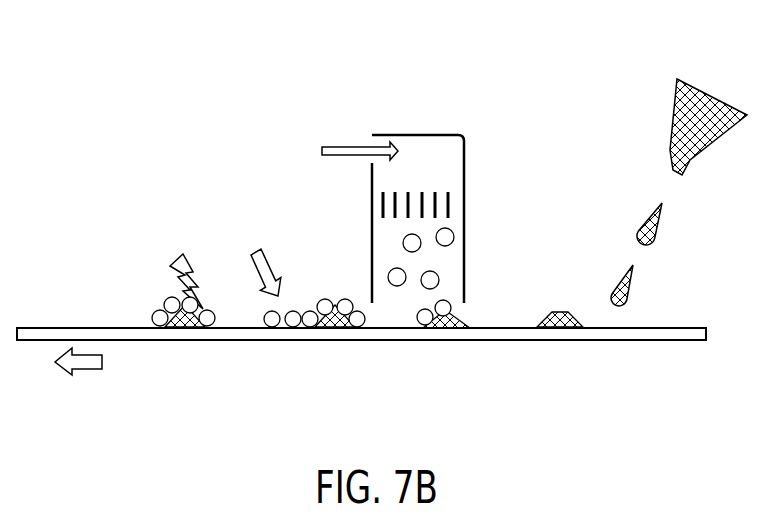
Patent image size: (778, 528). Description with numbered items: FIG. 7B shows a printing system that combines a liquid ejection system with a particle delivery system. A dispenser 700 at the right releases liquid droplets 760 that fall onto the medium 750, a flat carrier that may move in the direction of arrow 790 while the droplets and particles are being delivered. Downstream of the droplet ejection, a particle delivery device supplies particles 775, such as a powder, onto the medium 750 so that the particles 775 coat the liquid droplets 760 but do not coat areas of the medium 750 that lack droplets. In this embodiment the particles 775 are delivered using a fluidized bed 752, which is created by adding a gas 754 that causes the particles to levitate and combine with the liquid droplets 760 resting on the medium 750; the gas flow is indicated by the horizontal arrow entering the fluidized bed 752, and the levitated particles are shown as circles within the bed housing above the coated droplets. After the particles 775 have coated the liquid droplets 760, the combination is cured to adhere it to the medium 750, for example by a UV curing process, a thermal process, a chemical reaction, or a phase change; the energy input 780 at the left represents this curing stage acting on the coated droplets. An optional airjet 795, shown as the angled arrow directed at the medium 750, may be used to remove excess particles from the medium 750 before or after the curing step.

The dispenser / funnel 700 is at (712, 90).
The medium 750 is at (658, 341).
The fluidized bed 752 is at (410, 73).
The gas 754 is at (347, 143).
The liquid droplets 760 is at (662, 230).
The particles 775 is at (343, 298).
The energy source / heating 780 is at (177, 280).
The arrow 790 is at (78, 370).
The airjet 795 is at (257, 253).